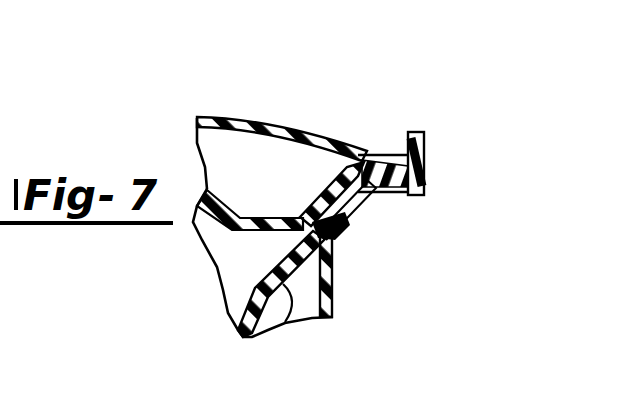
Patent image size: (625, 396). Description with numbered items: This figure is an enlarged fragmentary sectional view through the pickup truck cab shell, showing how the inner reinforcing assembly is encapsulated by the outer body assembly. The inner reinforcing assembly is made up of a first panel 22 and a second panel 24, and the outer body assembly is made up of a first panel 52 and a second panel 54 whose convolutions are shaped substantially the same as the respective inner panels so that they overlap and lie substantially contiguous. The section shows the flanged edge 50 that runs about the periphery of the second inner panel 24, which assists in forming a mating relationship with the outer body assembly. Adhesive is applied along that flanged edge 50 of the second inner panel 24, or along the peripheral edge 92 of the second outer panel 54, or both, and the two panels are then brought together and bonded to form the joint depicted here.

The first panel 22 is at (258, 218).
The second panel 24 is at (283, 333).
The flanged edge 50 is at (340, 231).
The first panel 52 is at (305, 134).
The second panel 54 is at (353, 207).
The peripheral edge 92 is at (381, 193).